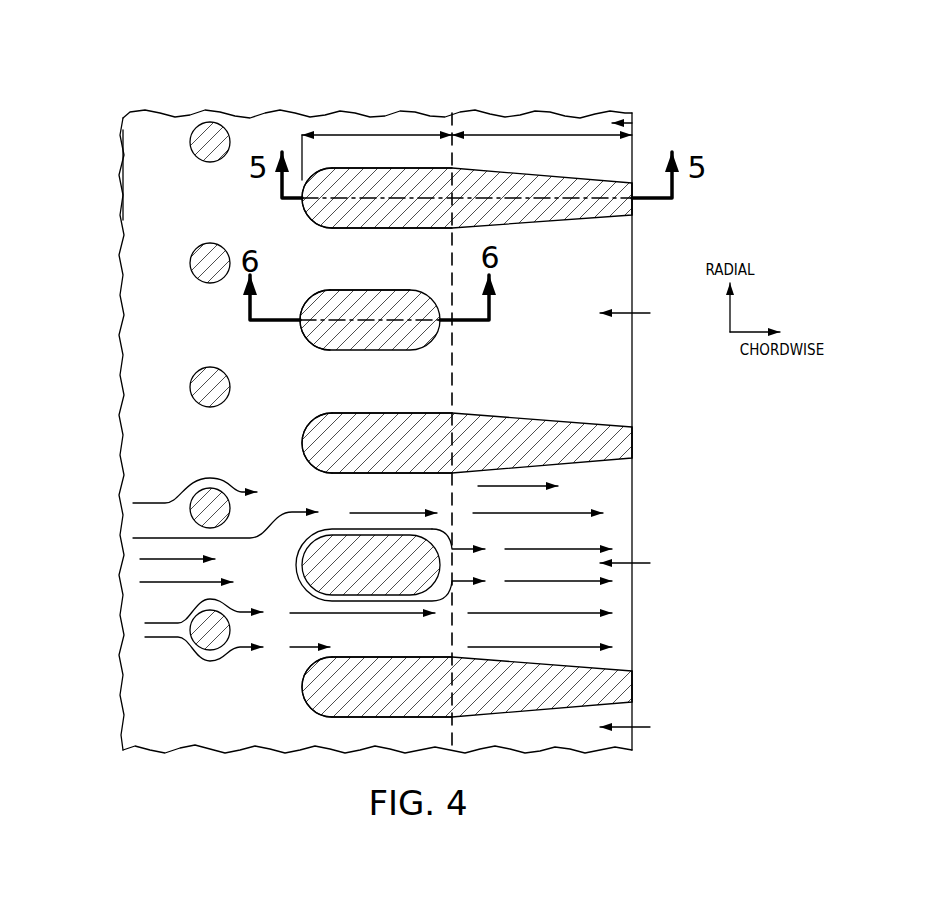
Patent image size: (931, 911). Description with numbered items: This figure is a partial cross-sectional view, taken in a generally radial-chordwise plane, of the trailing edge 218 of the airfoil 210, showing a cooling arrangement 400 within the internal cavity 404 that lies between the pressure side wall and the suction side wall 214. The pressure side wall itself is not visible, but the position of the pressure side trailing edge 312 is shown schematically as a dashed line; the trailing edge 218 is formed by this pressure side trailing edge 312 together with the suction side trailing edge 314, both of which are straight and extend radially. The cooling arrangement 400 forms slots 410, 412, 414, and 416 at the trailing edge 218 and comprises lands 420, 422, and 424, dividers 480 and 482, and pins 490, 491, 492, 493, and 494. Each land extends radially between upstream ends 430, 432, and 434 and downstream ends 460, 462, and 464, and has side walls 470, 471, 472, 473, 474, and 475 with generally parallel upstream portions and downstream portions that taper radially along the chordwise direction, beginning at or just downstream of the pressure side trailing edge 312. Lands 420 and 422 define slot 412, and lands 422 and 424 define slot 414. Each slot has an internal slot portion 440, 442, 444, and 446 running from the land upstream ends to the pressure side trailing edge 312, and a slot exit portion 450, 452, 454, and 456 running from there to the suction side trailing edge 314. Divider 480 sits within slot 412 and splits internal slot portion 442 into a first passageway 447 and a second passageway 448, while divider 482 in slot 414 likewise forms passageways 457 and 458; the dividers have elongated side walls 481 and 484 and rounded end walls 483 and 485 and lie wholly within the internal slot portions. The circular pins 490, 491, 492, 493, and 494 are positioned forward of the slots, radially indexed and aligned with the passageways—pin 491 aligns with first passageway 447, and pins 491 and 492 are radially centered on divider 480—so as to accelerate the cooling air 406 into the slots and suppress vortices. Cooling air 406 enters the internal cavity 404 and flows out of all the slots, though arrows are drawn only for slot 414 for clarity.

The airfoil 210 is at (106, 87).
The suction side wall 214 is at (542, 125).
The trailing edge 218 is at (591, 90).
The pressure side trailing edge 312 is at (452, 128).
The suction side trailing edge 314 is at (632, 113).
The cooling arrangement 400 is at (222, 97).
The internal cavity 404 is at (138, 150).
The cooling air 406 is at (187, 484).
The slot 410 is at (632, 123).
The slot 412 is at (632, 313).
The slot 414 is at (632, 563).
The slot 416 is at (632, 727).
The land 420 is at (370, 160).
The land 422 is at (338, 410).
The land 424 is at (340, 655).
The upstream end 430 is at (302, 200).
The upstream end 432 is at (302, 440).
The upstream end 434 is at (302, 686).
The internal slot portion 440 is at (335, 128).
The internal slot portion 442 is at (330, 279).
The internal slot portion 444 is at (330, 509).
The internal slot portion 446 is at (306, 747).
The first passageway 447 is at (317, 263).
The second passageway 448 is at (310, 388).
The slot exit portion 450 is at (508, 130).
The slot exit portion 452 is at (501, 278).
The slot exit portion 454 is at (575, 499).
The slot exit portion 456 is at (501, 745).
The first passageway 457 is at (330, 482).
The second passageway 458 is at (322, 626).
The downstream end 460 is at (632, 208).
The downstream end 462 is at (632, 440).
The downstream end 464 is at (632, 688).
The side wall 470 is at (404, 162).
The side wall 471 is at (436, 230).
The side wall 472 is at (412, 413).
The side wall 473 is at (442, 475).
The side wall 474 is at (412, 657).
The side wall 475 is at (438, 718).
The divider 480 is at (310, 333).
The side wall 481 is at (383, 290).
The divider 482 is at (310, 583).
The rounded end wall 483 is at (300, 318).
The side wall 484 is at (310, 528).
The rounded end wall 485 is at (300, 560).
The pin 490 is at (204, 158).
The pin 491 is at (200, 268).
The pin 492 is at (200, 388).
The pin 493 is at (200, 512).
The pin 494 is at (204, 641).